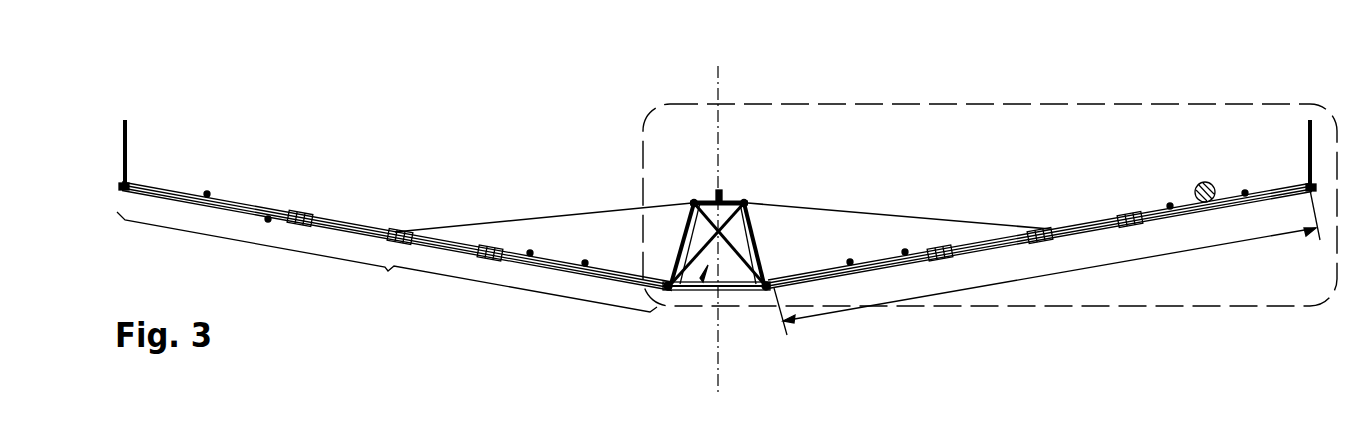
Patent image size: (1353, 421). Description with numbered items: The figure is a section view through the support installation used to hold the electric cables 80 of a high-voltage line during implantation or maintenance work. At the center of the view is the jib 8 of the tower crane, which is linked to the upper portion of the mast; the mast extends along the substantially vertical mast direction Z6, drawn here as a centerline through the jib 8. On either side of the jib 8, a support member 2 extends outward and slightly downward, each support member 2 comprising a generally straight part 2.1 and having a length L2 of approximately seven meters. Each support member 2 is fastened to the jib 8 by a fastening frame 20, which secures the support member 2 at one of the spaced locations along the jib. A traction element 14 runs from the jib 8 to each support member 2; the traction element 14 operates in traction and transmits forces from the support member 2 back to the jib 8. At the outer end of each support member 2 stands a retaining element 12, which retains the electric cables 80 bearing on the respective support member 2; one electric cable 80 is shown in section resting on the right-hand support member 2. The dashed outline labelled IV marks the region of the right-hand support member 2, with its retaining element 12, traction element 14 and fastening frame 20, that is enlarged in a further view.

The support member 2 is at (290, 176).
The generally straight part 2.1 is at (387, 262).
The jib 8 is at (695, 288).
The retaining element 12 is at (128, 141).
The traction element 14 is at (918, 207).
The fastening frame 20 is at (757, 230).
The electric cable 80 is at (1200, 182).
The mast direction Z6 is at (717, 219).
The detail region IV is at (1178, 104).
The length of support member L2 is at (1047, 262).